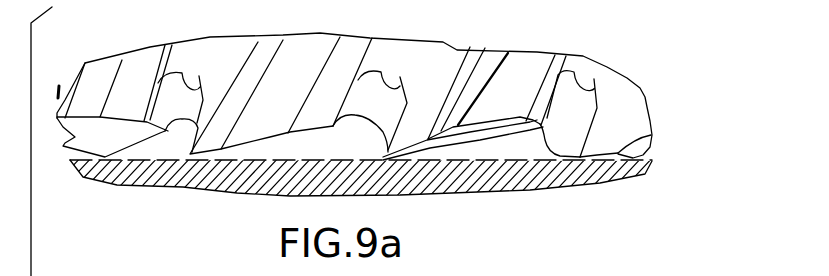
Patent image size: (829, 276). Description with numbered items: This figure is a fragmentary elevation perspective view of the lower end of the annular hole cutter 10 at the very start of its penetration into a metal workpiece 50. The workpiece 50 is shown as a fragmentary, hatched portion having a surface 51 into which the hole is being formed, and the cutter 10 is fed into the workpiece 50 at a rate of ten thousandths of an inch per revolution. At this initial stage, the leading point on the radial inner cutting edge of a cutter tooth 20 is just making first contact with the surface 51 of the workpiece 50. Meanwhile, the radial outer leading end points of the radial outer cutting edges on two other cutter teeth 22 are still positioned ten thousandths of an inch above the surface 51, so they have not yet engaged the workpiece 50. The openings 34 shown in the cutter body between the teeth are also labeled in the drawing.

The annular hole cutter 10 is at (665, 78).
The cutter tooth 20 is at (456, 170).
The cutter teeth 22 is at (205, 168).
The holes 34 is at (198, 91).
The workpiece 50 is at (660, 183).
The surface 51 is at (652, 138).